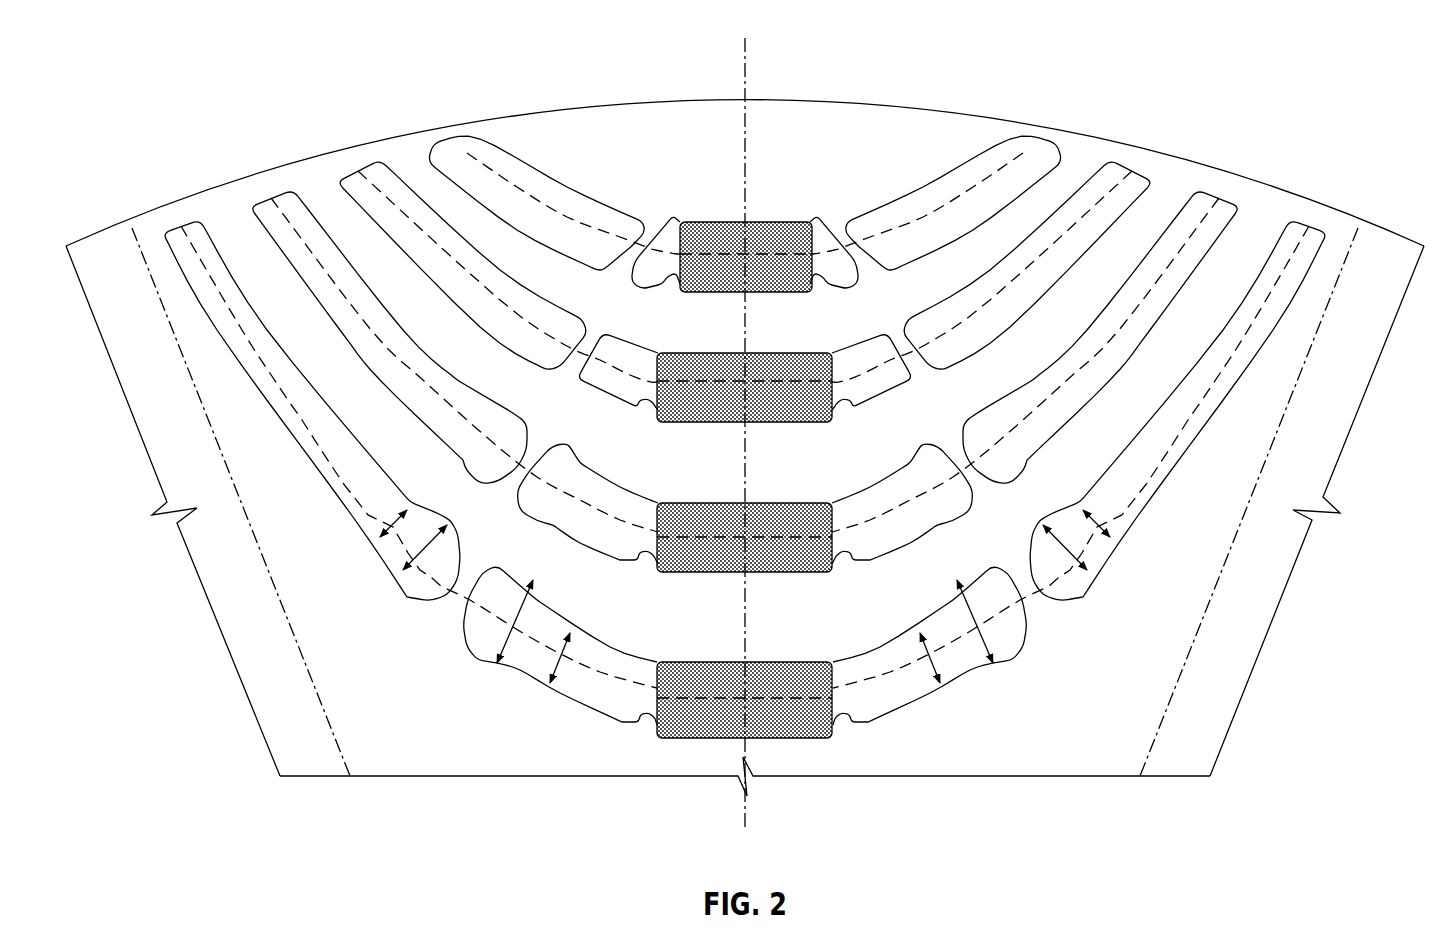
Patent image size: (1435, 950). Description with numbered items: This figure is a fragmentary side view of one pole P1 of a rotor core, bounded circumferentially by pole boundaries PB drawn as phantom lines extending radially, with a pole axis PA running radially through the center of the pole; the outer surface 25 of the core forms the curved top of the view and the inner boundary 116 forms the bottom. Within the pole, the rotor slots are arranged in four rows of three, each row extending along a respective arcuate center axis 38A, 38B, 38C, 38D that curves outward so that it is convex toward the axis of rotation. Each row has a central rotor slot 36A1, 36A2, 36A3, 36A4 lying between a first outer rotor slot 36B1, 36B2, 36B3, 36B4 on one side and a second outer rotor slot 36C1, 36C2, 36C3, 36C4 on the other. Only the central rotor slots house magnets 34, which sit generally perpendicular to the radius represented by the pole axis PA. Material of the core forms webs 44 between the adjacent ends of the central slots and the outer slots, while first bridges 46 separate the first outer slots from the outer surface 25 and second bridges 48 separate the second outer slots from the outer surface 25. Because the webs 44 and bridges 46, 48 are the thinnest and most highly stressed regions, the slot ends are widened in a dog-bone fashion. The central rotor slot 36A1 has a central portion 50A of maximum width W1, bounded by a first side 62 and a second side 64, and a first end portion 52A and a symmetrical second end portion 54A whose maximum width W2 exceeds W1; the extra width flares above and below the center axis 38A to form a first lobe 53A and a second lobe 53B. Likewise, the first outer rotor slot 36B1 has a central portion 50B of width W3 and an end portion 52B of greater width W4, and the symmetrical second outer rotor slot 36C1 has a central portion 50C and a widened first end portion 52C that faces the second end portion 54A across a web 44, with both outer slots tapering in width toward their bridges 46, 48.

The outer surface 25 is at (666, 97).
The magnet 34 is at (712, 240).
The central rotor slot 36A1 is at (586, 683).
The central rotor slot 36A2 is at (862, 562).
The central rotor slot 36A3 is at (860, 410).
The central rotor slot 36A4 is at (836, 282).
The first outer rotor slot 36B1 is at (1222, 383).
The first outer rotor slot 36B2 is at (1193, 253).
The first outer rotor slot 36B3 is at (1057, 233).
The first outer rotor slot 36B4 is at (983, 173).
The second outer rotor slot 36C1 is at (263, 382).
The second outer rotor slot 36C2 is at (290, 258).
The second outer rotor slot 36C3 is at (413, 213).
The second outer rotor slot 36C4 is at (537, 220).
The center axis 38A is at (1134, 514).
The center axis 38B is at (1100, 381).
The center axis 38C is at (1011, 304).
The center axis 38D is at (935, 203).
The web 44 is at (613, 273).
The first bridge 46 is at (1030, 137).
The second bridge 48 is at (178, 214).
The central portion 50A is at (870, 710).
The central portion 50B is at (1167, 463).
The central portion 50C is at (283, 410).
The first end portion 52A is at (1017, 640).
The end portion 52B is at (1040, 543).
The first end portion 52C is at (425, 600).
The first lobe 53A is at (1017, 653).
The second lobe 53B is at (990, 570).
The second end portion 54A is at (478, 615).
The first side 62 is at (958, 695).
The second side 64 is at (950, 612).
The inner surface of rotor core 116 is at (393, 758).
The pole axis PA is at (747, 62).
The pole boundary PB is at (302, 655).
The pole P1 is at (1038, 756).
The maximum width of central portion W1 is at (560, 655).
The maximum width of end portion W2 is at (505, 633).
The maximum width of central portion W3 is at (380, 537).
The maximum width of end portion W4 is at (405, 558).